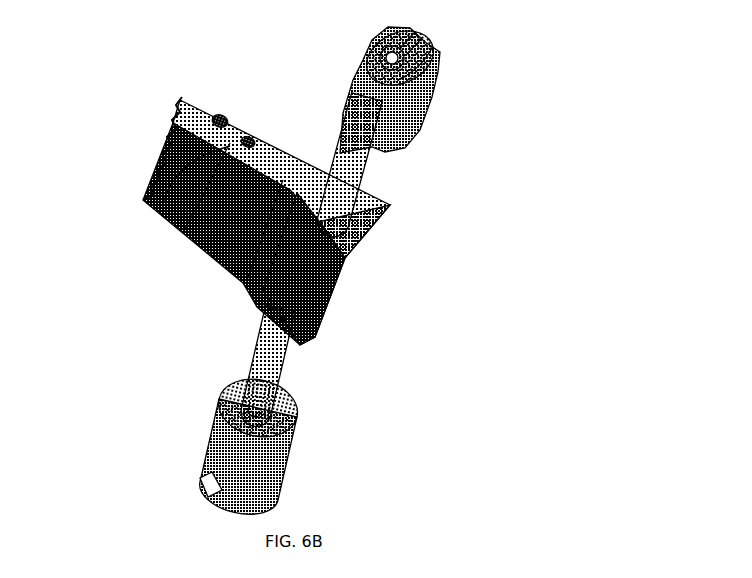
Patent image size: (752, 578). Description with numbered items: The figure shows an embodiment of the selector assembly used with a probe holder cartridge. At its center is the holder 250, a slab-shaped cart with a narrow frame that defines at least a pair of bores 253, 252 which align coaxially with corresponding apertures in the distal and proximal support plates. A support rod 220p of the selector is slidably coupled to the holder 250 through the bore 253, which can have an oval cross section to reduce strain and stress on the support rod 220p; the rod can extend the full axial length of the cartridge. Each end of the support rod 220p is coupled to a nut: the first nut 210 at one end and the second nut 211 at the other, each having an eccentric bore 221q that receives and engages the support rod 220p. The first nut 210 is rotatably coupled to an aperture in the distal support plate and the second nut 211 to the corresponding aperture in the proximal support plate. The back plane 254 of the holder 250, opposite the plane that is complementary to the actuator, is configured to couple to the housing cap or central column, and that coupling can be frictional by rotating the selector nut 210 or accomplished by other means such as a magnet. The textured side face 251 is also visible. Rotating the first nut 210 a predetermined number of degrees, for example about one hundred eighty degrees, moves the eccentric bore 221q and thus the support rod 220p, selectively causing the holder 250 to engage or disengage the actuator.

The first nut 210 is at (386, 110).
The second nut 211 is at (268, 457).
The support rod 220p is at (348, 168).
The eccentric bore 221q is at (395, 60).
The holder 250 is at (318, 262).
The textured side face 251 is at (182, 204).
The bore 252 is at (212, 121).
The bore 253 is at (348, 202).
The back plane 254 is at (337, 306).